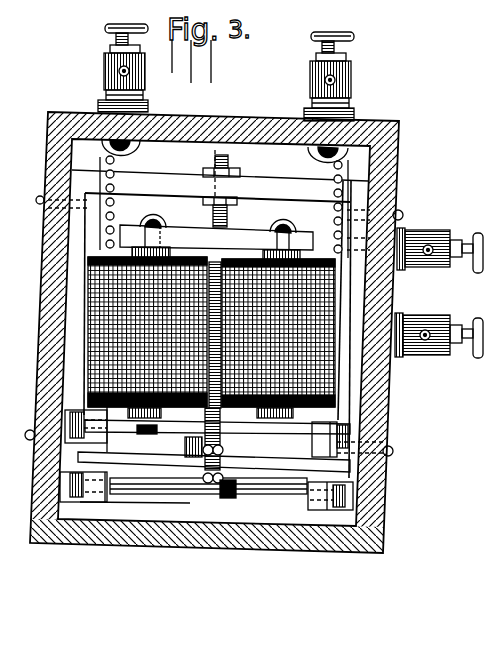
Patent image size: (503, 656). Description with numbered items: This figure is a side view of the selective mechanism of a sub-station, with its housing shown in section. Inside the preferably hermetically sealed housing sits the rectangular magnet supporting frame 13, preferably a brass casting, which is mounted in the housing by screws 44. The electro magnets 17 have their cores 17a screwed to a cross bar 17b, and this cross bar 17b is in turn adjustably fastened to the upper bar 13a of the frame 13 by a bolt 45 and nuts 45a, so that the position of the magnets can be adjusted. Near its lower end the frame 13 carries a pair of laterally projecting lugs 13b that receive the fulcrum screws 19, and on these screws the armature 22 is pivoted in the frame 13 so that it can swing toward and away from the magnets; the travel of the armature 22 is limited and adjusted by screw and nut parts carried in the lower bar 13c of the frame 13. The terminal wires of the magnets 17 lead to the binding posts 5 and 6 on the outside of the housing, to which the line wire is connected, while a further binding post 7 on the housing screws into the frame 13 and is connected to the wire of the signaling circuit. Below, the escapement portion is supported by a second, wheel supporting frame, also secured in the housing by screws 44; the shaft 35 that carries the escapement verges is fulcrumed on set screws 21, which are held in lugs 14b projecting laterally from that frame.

The binding post 5 is at (112, 70).
The binding post 6 is at (313, 74).
The binding post 7 is at (428, 328).
The magnet supporting frame 13 is at (72, 257).
The upper bar 13a is at (280, 185).
The laterally projecting lugs 13b is at (396, 416).
The lower bar 13c is at (297, 472).
The lugs 14b is at (340, 560).
The electro magnets 17 is at (88, 329).
The cores 17a is at (267, 420).
The cross bar 17b is at (183, 228).
The fulcrum screws 19 is at (70, 415).
The set screws 21 is at (68, 500).
The armature 22 is at (184, 430).
The shaft 35 is at (152, 493).
The screws 44 is at (38, 197).
The bolt 45 is at (229, 218).
The nuts 45a is at (218, 172).